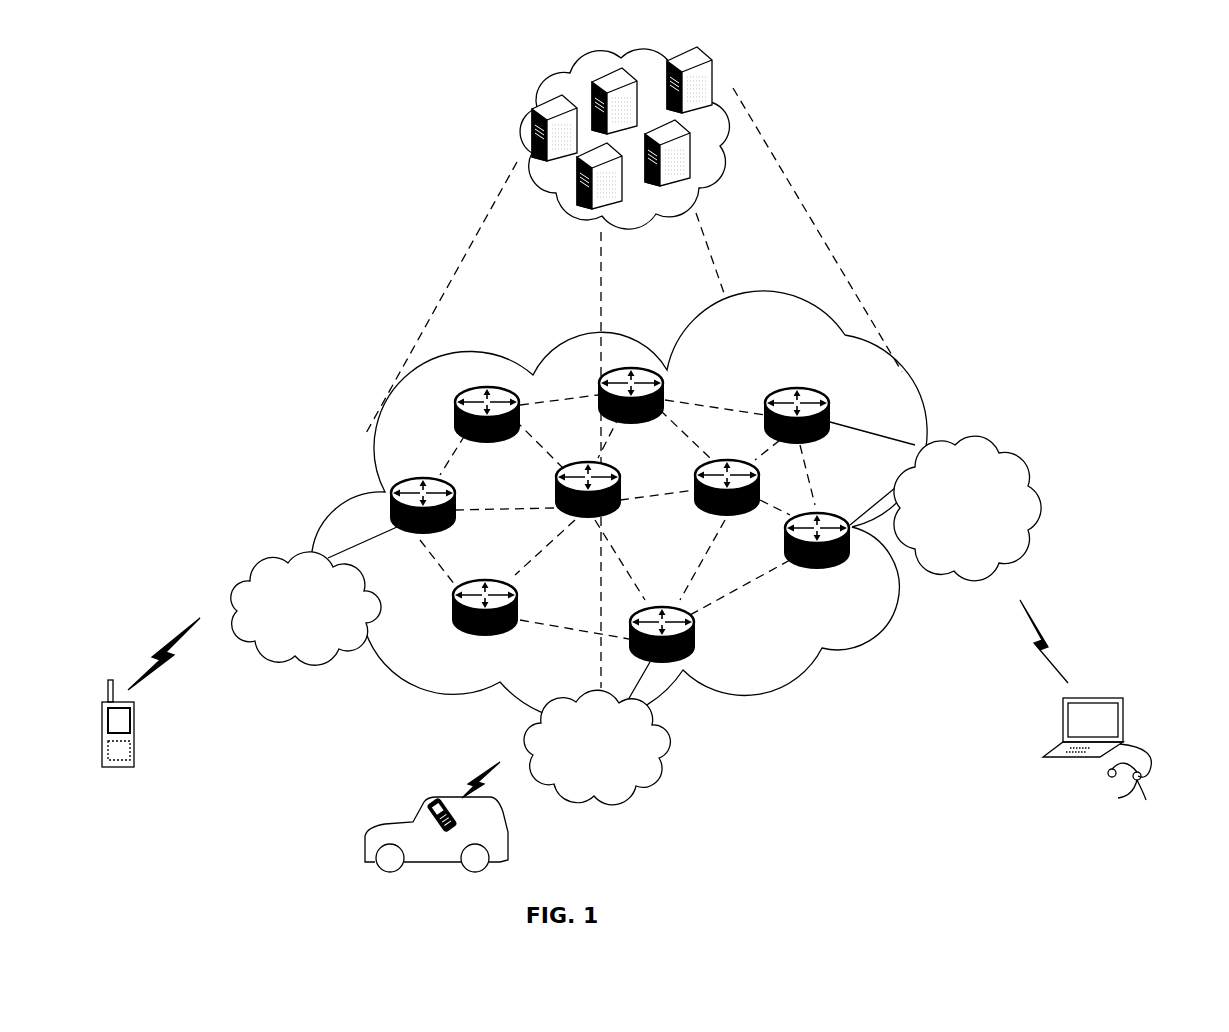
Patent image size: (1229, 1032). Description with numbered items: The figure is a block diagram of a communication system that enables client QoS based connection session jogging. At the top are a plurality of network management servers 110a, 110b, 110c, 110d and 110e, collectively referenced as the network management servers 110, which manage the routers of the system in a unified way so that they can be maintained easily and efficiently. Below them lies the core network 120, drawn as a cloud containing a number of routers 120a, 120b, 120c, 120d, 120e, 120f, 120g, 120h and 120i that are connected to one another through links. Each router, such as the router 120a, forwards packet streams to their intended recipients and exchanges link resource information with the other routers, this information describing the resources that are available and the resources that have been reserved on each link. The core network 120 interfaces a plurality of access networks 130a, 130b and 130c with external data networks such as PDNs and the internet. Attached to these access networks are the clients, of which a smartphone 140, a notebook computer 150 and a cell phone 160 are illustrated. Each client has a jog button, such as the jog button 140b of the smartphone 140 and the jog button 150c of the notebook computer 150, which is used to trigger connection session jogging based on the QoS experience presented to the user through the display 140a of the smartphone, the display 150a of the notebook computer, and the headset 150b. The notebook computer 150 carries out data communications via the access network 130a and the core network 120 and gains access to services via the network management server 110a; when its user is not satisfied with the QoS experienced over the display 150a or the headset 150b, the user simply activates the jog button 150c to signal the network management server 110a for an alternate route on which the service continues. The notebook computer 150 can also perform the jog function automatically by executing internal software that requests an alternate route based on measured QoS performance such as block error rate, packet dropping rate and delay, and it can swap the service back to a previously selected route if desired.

The network management servers 110 is at (565, 80).
The network management server 110a is at (580, 198).
The network management server 110b is at (532, 145).
The network management server 110c is at (610, 80).
The network management server 110d is at (715, 70).
The network management server 110e is at (692, 165).
The core network 120 is at (780, 292).
The router 120a is at (460, 392).
The router 120b is at (617, 368).
The router 120c is at (796, 388).
The router 120d is at (402, 479).
The router 120e is at (581, 462).
The router 120f is at (727, 459).
The router 120g is at (823, 512).
The router 120h is at (466, 634).
The router 120i is at (695, 650).
The access network 130a is at (232, 577).
The access network 130b is at (668, 768).
The access network 130c is at (1020, 447).
The smartphone 140 is at (118, 770).
The display 140a is at (131, 708).
The jog button 140b is at (132, 752).
The notebook computer 150 is at (1098, 697).
The display 150a is at (1112, 712).
The headset 150b is at (1152, 774).
The jog button 150c is at (1062, 739).
The cell phone 160 is at (441, 806).